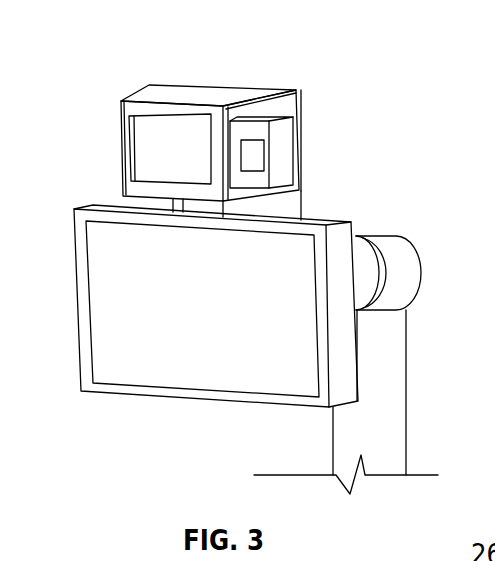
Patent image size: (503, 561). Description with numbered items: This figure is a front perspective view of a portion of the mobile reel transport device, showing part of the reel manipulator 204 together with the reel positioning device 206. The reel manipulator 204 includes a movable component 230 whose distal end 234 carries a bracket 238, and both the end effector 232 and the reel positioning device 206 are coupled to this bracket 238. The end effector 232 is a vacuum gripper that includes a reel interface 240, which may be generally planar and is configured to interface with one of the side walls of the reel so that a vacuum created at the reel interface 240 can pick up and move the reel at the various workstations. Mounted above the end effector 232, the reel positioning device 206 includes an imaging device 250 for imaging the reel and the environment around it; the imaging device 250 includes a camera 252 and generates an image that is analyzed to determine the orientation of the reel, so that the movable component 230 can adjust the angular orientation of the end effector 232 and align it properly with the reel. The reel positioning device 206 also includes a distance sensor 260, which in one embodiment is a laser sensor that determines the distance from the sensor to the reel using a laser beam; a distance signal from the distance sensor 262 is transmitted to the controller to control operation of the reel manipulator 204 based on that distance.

The reel manipulator 204 is at (262, 308).
The reel positioning device 206 is at (189, 121).
The movable component 230 is at (387, 380).
The end effector 232 is at (187, 365).
The distal end 234 is at (373, 233).
The bracket 238 is at (304, 198).
The reel interface 240 is at (113, 343).
The imaging device 250 is at (124, 143).
The camera 252 is at (157, 150).
The distance sensor 260 is at (290, 125).
The distance sensor 262 is at (250, 147).